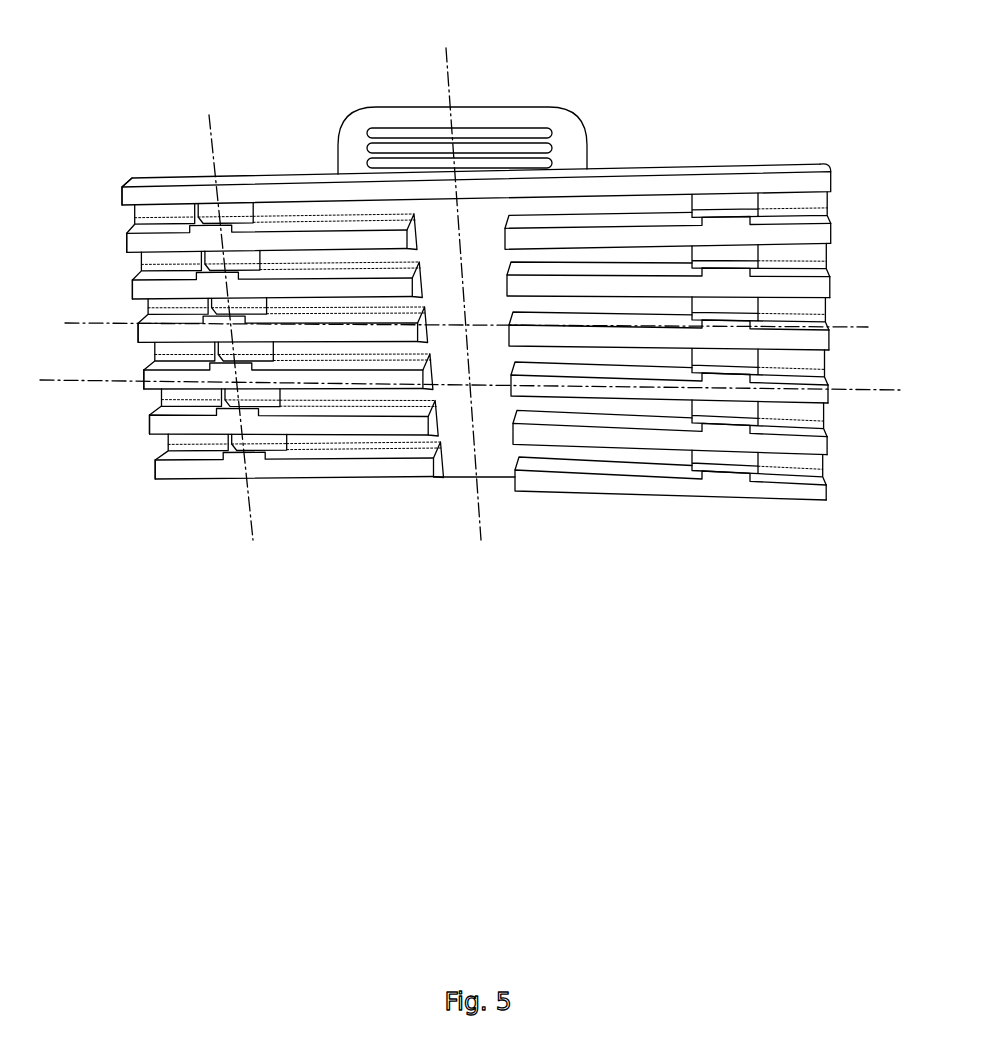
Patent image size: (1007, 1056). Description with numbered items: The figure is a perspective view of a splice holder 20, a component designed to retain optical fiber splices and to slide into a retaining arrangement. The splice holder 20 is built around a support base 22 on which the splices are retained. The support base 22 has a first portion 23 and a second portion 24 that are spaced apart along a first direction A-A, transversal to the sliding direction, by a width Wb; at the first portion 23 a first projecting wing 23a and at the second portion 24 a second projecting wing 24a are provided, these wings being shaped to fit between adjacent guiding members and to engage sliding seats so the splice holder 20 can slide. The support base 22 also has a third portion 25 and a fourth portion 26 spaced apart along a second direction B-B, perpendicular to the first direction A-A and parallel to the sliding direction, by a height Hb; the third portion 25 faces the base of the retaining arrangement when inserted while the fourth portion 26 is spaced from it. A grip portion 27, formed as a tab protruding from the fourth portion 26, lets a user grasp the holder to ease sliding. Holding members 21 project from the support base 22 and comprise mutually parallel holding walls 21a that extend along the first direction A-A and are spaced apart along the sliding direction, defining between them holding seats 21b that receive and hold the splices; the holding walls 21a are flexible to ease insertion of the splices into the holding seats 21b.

The splice holder 20 is at (137, 112).
The holding members 21 is at (822, 237).
The holding walls 21a is at (617, 233).
The holding seats 21b is at (300, 260).
The support base 22 is at (481, 440).
The first portion 23 is at (141, 290).
The first projecting wing 23a is at (133, 197).
The second portion 24 is at (821, 201).
The second projecting wing 24a is at (822, 166).
The third portion 25 is at (465, 458).
The fourth portion 26 is at (318, 170).
The grip portion 27 is at (503, 128).
The first direction A is at (465, 329).
The second direction B is at (464, 296).
The width Wb is at (143, 390).
The height Hb is at (243, 481).